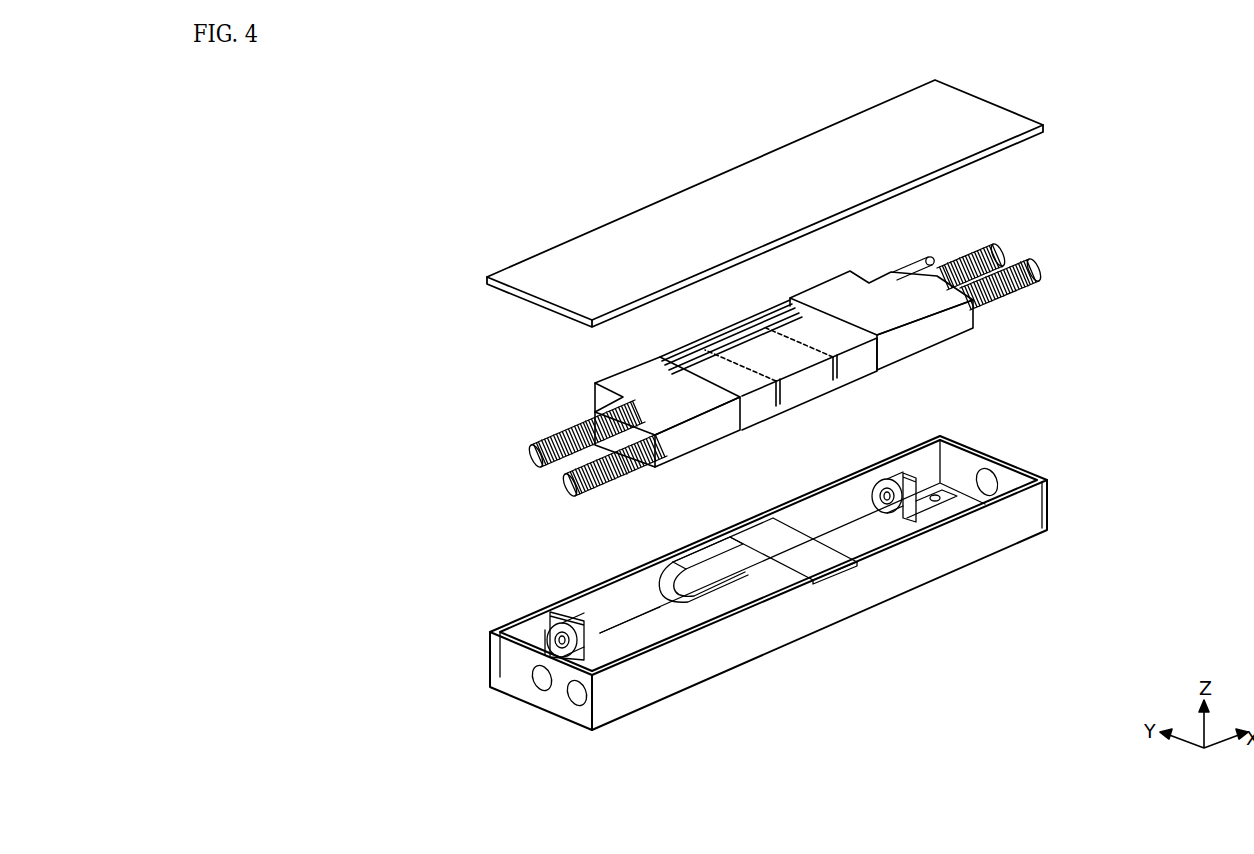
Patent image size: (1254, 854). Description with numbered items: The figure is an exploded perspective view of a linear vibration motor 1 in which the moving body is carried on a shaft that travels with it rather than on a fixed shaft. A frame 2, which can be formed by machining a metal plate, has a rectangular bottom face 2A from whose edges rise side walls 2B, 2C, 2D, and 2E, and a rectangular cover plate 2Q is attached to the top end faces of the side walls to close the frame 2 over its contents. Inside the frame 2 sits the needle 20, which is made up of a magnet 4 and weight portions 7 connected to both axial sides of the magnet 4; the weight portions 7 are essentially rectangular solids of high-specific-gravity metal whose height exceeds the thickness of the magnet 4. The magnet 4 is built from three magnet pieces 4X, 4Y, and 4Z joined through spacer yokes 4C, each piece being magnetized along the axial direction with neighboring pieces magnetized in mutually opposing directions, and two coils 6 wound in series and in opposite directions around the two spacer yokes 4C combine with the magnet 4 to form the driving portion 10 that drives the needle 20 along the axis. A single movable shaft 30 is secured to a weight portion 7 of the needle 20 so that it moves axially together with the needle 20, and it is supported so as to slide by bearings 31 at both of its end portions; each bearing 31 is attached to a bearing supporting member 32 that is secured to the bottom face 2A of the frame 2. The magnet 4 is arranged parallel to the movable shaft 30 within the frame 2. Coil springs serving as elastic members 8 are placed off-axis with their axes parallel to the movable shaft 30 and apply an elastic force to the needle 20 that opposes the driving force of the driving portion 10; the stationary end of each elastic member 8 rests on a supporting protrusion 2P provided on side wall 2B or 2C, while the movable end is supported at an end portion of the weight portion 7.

The linear vibration motor 1 is at (1163, 112).
The frame 2 is at (756, 601).
The bottom face 2A is at (650, 631).
The side wall 2B is at (495, 672).
The side wall 2C is at (1022, 468).
The side wall 2D is at (743, 642).
The side wall 2E is at (582, 610).
The supporting protrusion 2P is at (1003, 487).
The cover plate 2Q is at (977, 100).
The magnet 4 is at (757, 360).
The magnet piece 4X is at (684, 362).
The magnet piece 4Y is at (738, 342).
The magnet piece 4Z is at (805, 317).
The spacer yoke 4C is at (775, 328).
The coil 6 is at (838, 570).
The weight portion 7 is at (592, 382).
The elastic member 8 is at (992, 257).
The driving portion 10 is at (782, 595).
The needle 20 is at (776, 365).
The movable shaft 30 is at (920, 264).
The bearing 31 is at (892, 520).
The bearing supporting member 32 is at (545, 627).